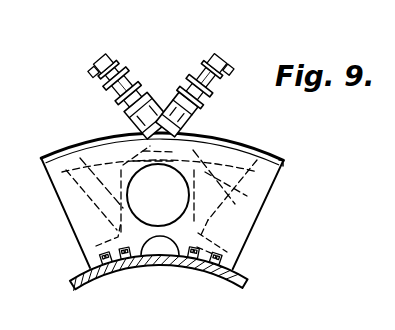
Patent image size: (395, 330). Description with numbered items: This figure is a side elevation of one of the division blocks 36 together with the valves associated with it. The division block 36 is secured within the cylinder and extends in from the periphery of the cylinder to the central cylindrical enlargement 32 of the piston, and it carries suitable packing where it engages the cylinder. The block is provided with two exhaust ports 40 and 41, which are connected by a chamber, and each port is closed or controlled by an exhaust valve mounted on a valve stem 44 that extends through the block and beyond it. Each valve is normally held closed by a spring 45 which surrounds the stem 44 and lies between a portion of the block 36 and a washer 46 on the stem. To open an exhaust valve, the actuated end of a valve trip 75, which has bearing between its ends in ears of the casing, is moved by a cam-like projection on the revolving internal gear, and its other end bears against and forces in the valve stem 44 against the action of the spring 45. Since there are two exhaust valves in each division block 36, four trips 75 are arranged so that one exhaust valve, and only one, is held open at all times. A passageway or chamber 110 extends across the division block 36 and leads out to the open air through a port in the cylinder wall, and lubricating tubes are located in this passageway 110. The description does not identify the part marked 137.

The cylindrical enlargement 32 is at (203, 278).
The division block 36 is at (268, 158).
The exhaust port 40 is at (101, 217).
The exhaust port 41 is at (245, 194).
The valve stem 44 is at (113, 87).
The spring 45 is at (130, 88).
The washer 46 is at (113, 56).
The valve trip 75 is at (158, 195).
The passageway 110 is at (158, 257).
The pocket 137 is at (200, 237).